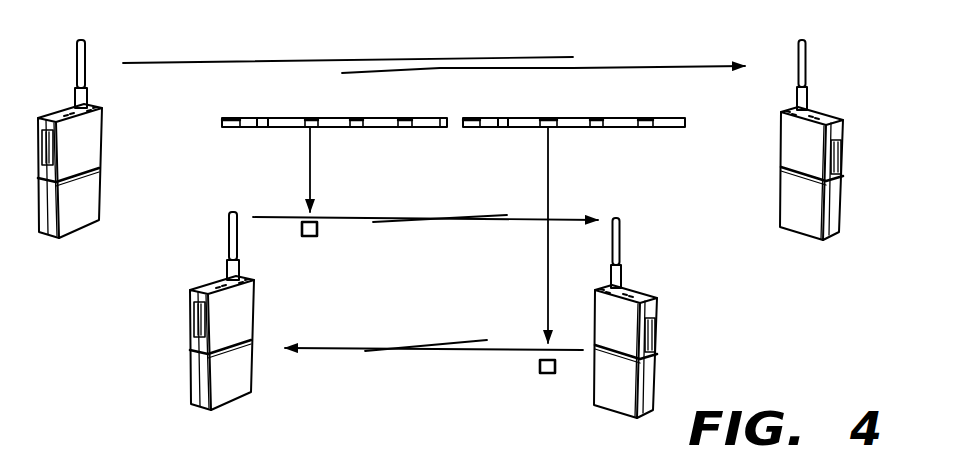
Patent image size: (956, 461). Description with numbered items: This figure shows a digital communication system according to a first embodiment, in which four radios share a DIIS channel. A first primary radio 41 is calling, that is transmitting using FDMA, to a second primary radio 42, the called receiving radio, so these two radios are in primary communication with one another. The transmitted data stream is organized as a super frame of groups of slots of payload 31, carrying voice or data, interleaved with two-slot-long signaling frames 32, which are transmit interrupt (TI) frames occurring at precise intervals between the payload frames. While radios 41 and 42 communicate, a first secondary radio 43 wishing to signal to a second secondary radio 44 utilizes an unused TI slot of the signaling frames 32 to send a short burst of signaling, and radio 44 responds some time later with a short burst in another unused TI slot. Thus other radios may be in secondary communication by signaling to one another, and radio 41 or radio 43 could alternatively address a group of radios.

The payload 31 is at (243, 128).
The signaling frames 32 is at (262, 128).
The first primary radio 41 is at (90, 140).
The second primary radio 42 is at (792, 143).
The first secondary radio 43 is at (240, 305).
The second secondary radio 44 is at (655, 329).